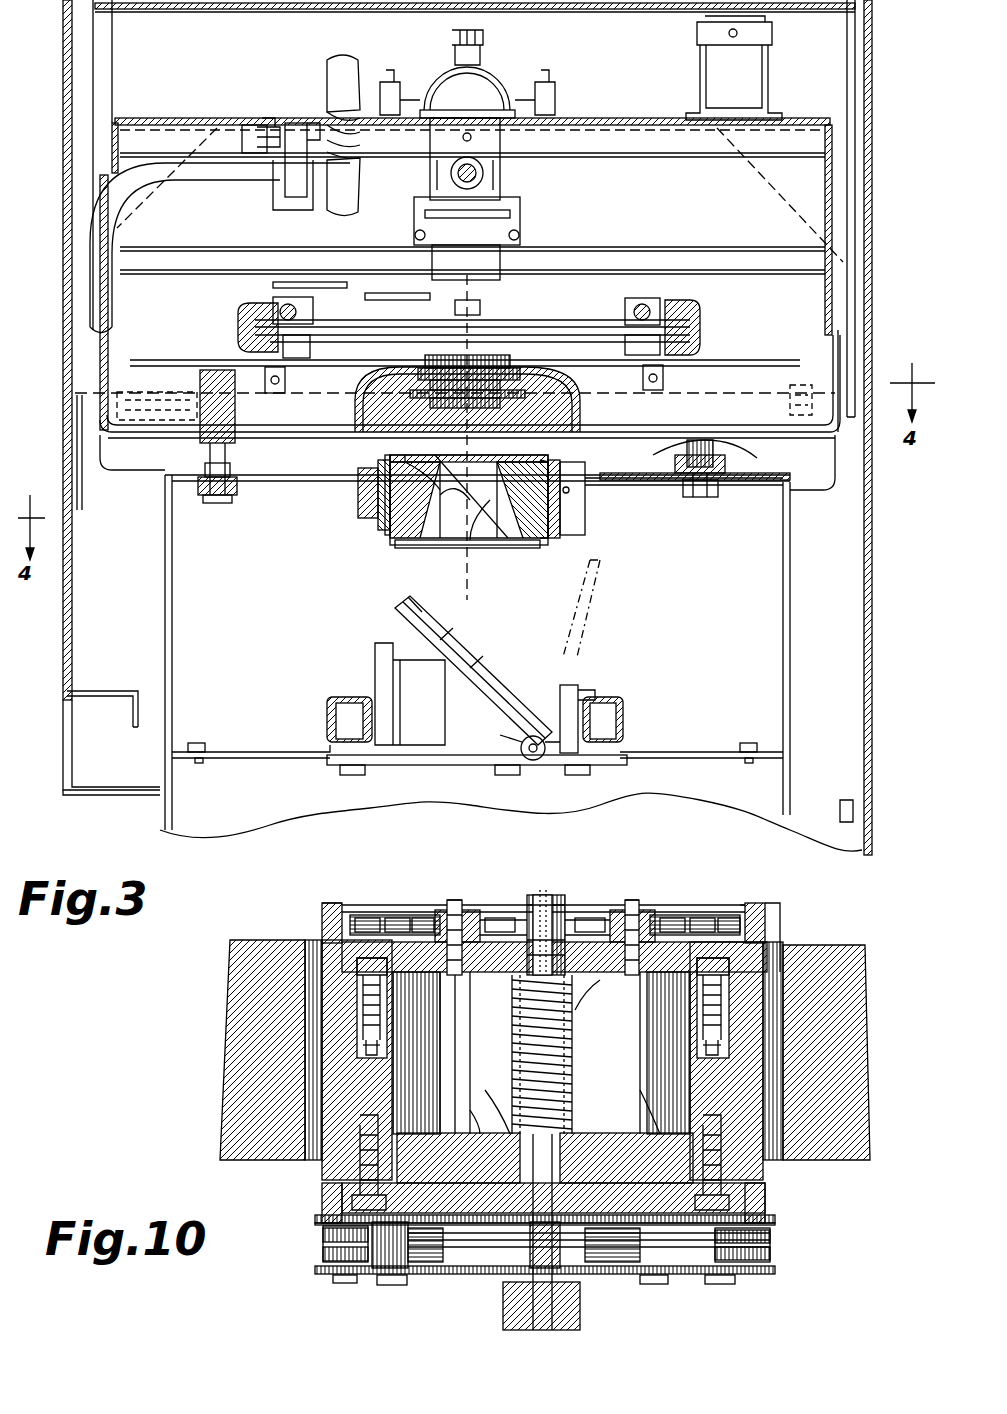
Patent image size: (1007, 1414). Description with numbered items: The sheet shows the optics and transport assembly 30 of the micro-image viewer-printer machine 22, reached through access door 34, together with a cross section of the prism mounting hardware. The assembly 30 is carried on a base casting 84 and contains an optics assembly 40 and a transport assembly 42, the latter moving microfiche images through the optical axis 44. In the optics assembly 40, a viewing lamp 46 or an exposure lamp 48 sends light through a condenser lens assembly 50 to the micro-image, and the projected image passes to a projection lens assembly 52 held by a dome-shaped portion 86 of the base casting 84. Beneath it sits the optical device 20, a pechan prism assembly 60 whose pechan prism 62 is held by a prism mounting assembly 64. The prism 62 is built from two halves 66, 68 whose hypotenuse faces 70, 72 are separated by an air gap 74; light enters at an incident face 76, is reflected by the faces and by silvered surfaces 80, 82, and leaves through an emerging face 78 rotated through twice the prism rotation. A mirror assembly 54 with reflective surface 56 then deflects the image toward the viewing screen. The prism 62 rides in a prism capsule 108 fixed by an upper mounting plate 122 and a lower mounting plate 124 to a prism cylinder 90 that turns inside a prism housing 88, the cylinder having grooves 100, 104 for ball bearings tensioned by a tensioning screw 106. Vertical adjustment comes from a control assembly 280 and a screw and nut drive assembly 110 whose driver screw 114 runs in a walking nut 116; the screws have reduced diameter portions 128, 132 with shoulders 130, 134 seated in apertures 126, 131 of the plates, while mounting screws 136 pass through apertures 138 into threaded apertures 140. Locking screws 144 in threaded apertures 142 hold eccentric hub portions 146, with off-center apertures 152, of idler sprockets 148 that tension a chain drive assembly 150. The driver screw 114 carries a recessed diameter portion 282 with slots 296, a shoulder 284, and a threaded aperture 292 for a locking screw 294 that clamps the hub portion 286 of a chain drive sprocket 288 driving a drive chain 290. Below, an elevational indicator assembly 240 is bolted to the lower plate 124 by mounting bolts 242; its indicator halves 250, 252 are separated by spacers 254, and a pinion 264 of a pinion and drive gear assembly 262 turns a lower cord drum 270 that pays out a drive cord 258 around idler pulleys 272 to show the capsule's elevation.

In FIG. 3, the optical device 20 is at (258, 534).
In FIG. 3, the micro-image viewer-printer machine 22 is at (105, 818).
In FIG. 3, the optics and transport assembly 30 is at (885, 208).
In FIG. 3, the access door 34 is at (70, 452).
In FIG. 3, the optics assembly 40 is at (596, 78).
In FIG. 3, the transport assembly 42 is at (697, 320).
In FIG. 3, the optical axis 44 is at (500, 293).
In FIG. 3, the viewing lamp 46 is at (490, 75).
In FIG. 3, the exposure lamp 48 is at (498, 178).
In FIG. 3, the condenser lens assembly 50 is at (445, 258).
In FIG. 3, the projection lens assembly 52 is at (520, 384).
In FIG. 3, the mirror assembly 54 is at (372, 640).
In FIG. 3, the reflective surface 56 is at (425, 612).
In FIG. 3, the pechan prism assembly 60 is at (352, 544).
In FIG. 3, the pechan prism 62 is at (440, 548).
In FIG. 3, the prism mounting assembly 64 is at (545, 542).
In FIG. 3, the pechan prism half 66 is at (580, 495).
In FIG. 3, the pechan prism half 68 is at (360, 500).
In FIG. 3, the hypotenuse face 70 is at (470, 500).
In FIG. 3, the hypotenuse face 72 is at (455, 500).
In FIG. 3, the plane parallel air gap 74 is at (487, 520).
In FIG. 3, the incident face 76 is at (470, 460).
In FIG. 3, the emerging face 78 is at (405, 548).
In FIG. 3, the silvered or reflective surface 80 is at (540, 460).
In FIG. 3, the silvered or reflective surface 82 is at (415, 470).
In FIG. 3, the base casting 84 is at (848, 385).
In FIG. 3, the dome-shaped portion 86 is at (372, 403).
In FIG. 3, the prism housing 88 is at (355, 482).
In FIG. 10, the prism housing 88 is at (328, 1043).
In FIG. 3, the prism cylinder 90 is at (556, 520).
In FIG. 10, the prism cylinder 90 is at (335, 1055).
In FIG. 10, the circumferential recess or groove 100 is at (318, 915).
In FIG. 10, the lower recess or groove 104 is at (360, 1165).
In FIG. 3, the ball bearing assembly tensioning screw 106 is at (570, 487).
In FIG. 3, the prism capsule 108 is at (370, 478).
In FIG. 10, the screw and nut drive assembly 110 is at (508, 1052).
In FIG. 10, the driver screw 114 is at (575, 1184).
In FIG. 10, the threaded walking nut 116 is at (637, 1100).
In FIG. 10, the upper mounting plate 122 is at (690, 940).
In FIG. 10, the lower mounting plate 124 is at (745, 1210).
In FIG. 10, the aperture 126 is at (566, 1006).
In FIG. 10, the unthreaded reduced diameter portion 128 is at (520, 975).
In FIG. 10, the lower shoulder portion 130 is at (601, 994).
In FIG. 10, the aperture 131 is at (590, 1133).
In FIG. 10, the unthreaded reduced diameter portion 132 is at (464, 1112).
In FIG. 10, the shoulder portion 134 is at (492, 1101).
In FIG. 10, the mounting screw 136 is at (360, 956).
In FIG. 10, the aperture 138 is at (352, 935).
In FIG. 10, the threaded aperture 140 is at (366, 1050).
In FIG. 10, the threaded aperture 142 is at (480, 990).
In FIG. 10, the threaded locking screw 144 is at (452, 905).
In FIG. 10, the hub portion 146 is at (450, 915).
In FIG. 10, the idler sprocket 148 is at (448, 925).
In FIG. 10, the chain drive assembly 150 is at (737, 875).
In FIG. 10, the longitudinal aperture 152 is at (450, 908).
In FIG. 10, the elevational indicator assembly 240 is at (770, 1297).
In FIG. 10, the threaded mounting bolt 242 is at (390, 1280).
In FIG. 10, the indicator half 250 is at (330, 1272).
In FIG. 10, the indicator half 252 is at (345, 1220).
In FIG. 10, the spacer 254 is at (390, 1262).
In FIG. 10, the drive cord 258 is at (460, 1252).
In FIG. 10, the pinion and drive gear assembly 262 is at (505, 1300).
In FIG. 10, the pinion 264 is at (530, 1252).
In FIG. 10, the lower cord drum 270 is at (605, 1255).
In FIG. 10, the idler pulley 272 is at (330, 1255).
In FIG. 10, the longitudinal or vertical adjustment control assembly 280 is at (232, 946).
In FIG. 10, the recessed diameter portion 282 is at (575, 905).
In FIG. 10, the lower shoulder portion 284 is at (560, 910).
In FIG. 10, the hub portion 286 is at (500, 905).
In FIG. 10, the chain drive sprocket 288 is at (470, 920).
In FIG. 10, the stainless steel drive chain 290 is at (352, 915).
In FIG. 10, the threaded aperture 292 is at (525, 910).
In FIG. 10, the locking screw 294 is at (550, 900).
In FIG. 10, the longitudinal slot 296 is at (543, 900).